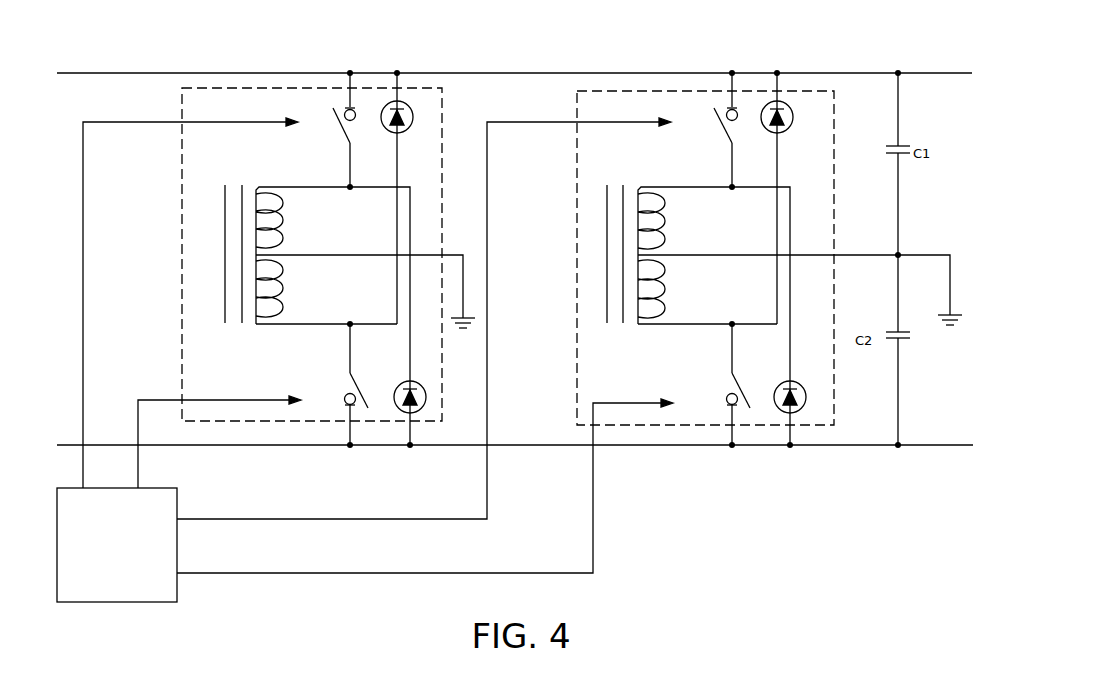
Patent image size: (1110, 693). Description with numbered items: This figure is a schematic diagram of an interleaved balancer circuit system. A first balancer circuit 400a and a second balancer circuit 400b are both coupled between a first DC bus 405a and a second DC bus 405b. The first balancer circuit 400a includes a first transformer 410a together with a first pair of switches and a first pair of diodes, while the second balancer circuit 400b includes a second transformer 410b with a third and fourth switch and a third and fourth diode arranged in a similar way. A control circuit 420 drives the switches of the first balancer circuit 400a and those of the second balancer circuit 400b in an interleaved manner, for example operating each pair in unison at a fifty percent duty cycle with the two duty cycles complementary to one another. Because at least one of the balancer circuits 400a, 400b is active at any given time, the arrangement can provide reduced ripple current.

The first balancer circuit 400a is at (285, 243).
The second balancer circuit 400b is at (730, 245).
The first DC bus 405a is at (514, 51).
The second DC bus 405b is at (515, 468).
The first transformer 410a is at (168, 232).
The second transformer 410b is at (560, 228).
The control circuit 420 is at (132, 564).